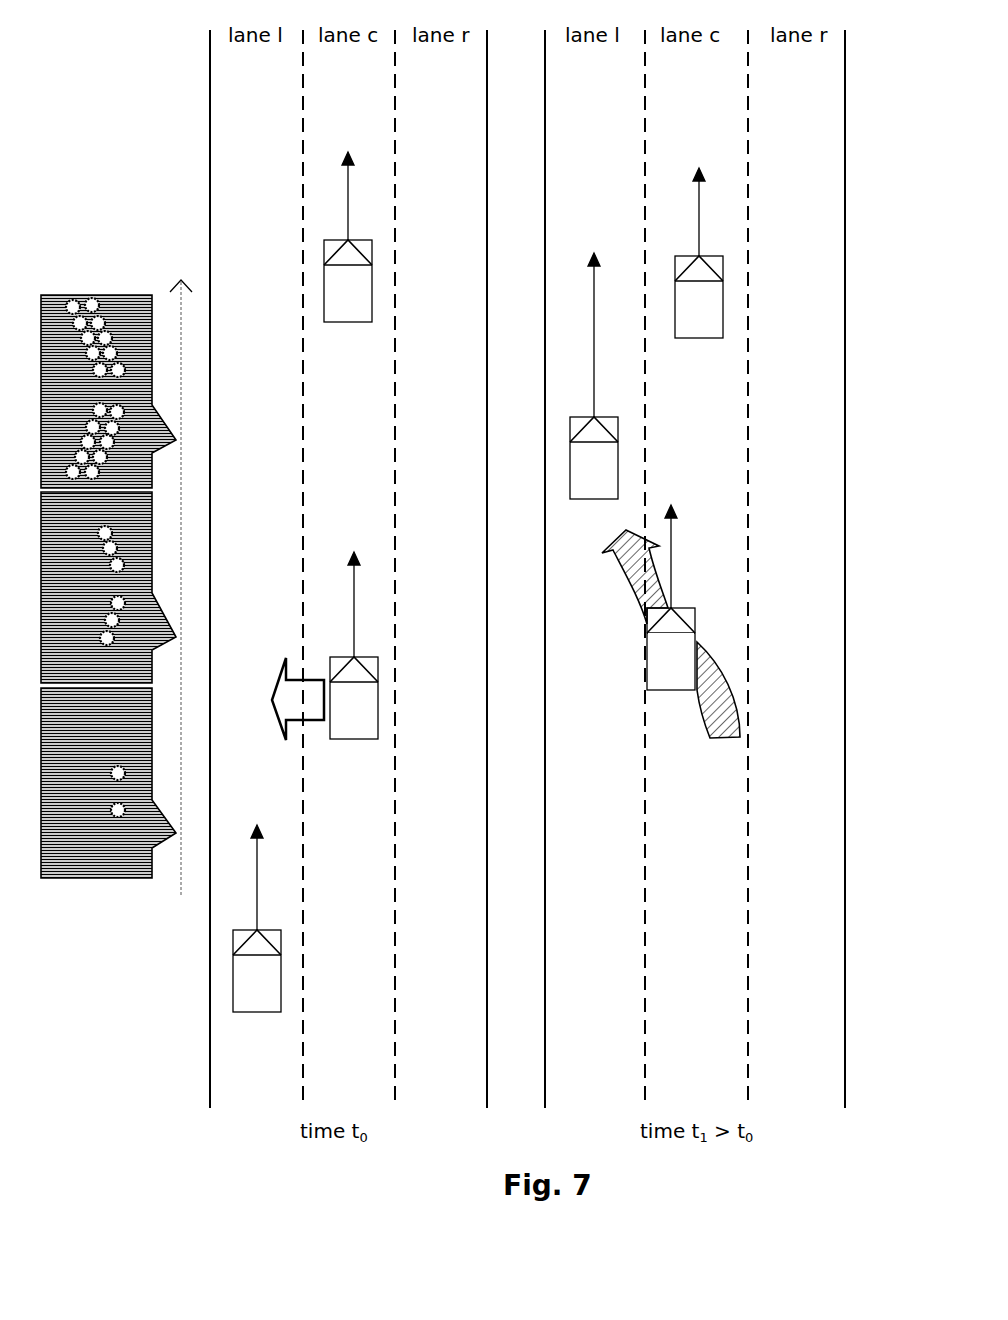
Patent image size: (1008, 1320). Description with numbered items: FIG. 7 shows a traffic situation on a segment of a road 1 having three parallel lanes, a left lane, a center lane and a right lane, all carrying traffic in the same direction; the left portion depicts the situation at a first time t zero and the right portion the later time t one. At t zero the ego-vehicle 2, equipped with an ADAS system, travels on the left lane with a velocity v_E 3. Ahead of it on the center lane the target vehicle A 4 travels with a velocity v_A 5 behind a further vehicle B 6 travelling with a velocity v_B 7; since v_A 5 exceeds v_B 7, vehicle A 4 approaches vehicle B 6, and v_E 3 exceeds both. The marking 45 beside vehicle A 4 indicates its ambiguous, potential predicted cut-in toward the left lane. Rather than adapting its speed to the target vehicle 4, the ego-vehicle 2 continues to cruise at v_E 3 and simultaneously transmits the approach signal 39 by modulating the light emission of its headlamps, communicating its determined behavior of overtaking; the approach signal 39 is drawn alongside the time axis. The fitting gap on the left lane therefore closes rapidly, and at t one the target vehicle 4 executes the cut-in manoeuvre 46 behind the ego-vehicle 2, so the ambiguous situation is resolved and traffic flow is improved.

The road 1 is at (470, 857).
The ego-vehicle 2 is at (281, 968).
The velocity v_E 3 is at (257, 882).
The vehicle A 4 is at (378, 680).
The velocity v_A 5 is at (354, 600).
The vehicle B 6 is at (372, 292).
The velocity v_B 7 is at (348, 195).
The approach signal 39 is at (131, 298).
The uncertain lane change intention 45 is at (283, 690).
The cut-in manoeuvre 46 is at (617, 572).